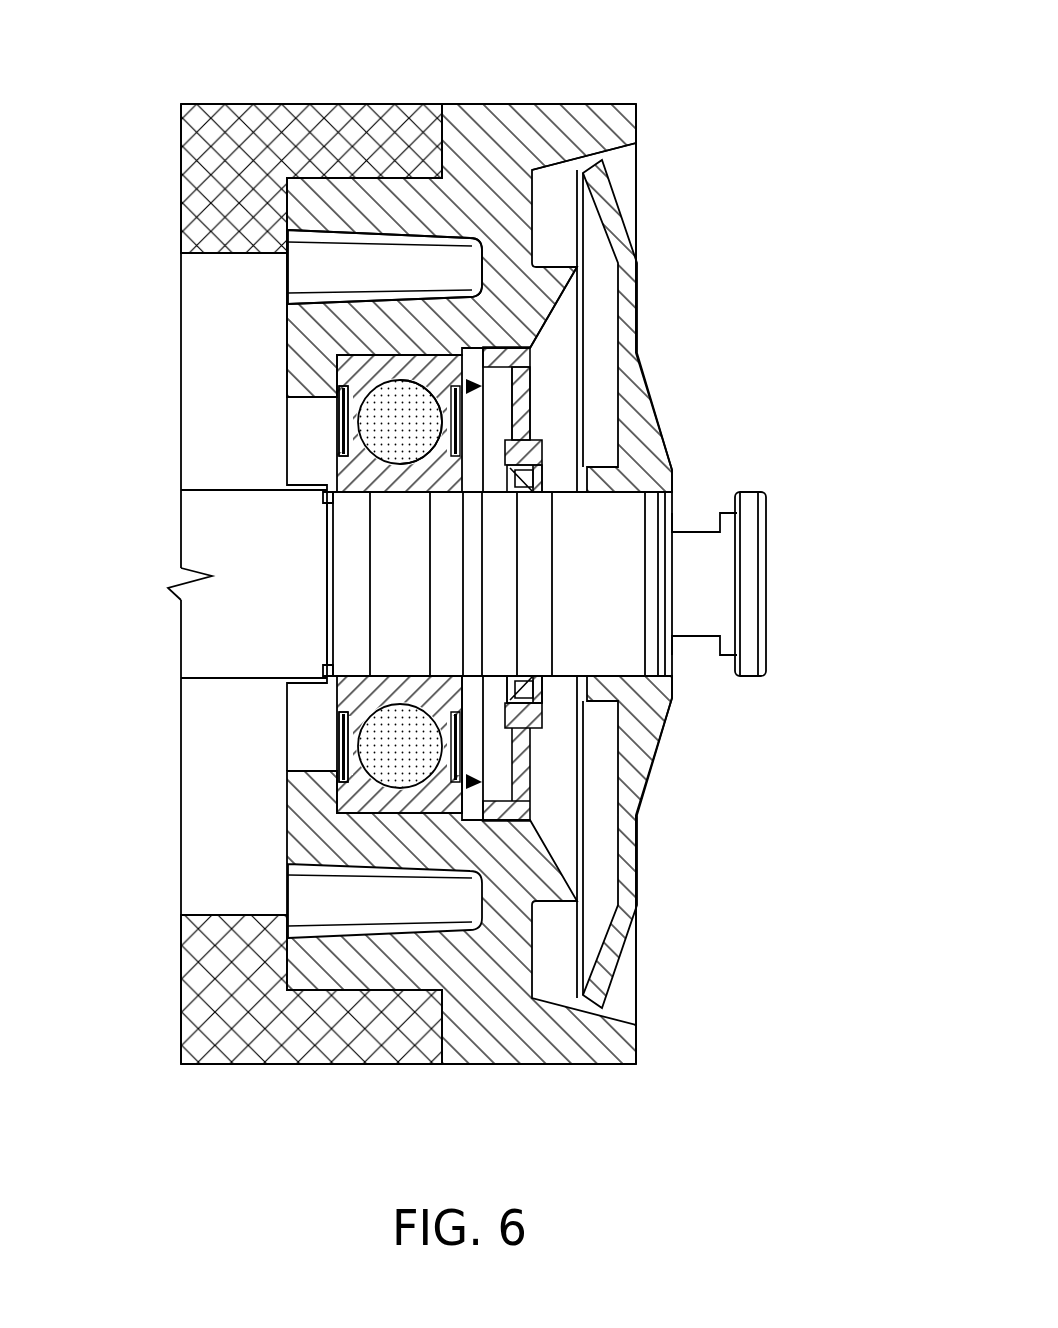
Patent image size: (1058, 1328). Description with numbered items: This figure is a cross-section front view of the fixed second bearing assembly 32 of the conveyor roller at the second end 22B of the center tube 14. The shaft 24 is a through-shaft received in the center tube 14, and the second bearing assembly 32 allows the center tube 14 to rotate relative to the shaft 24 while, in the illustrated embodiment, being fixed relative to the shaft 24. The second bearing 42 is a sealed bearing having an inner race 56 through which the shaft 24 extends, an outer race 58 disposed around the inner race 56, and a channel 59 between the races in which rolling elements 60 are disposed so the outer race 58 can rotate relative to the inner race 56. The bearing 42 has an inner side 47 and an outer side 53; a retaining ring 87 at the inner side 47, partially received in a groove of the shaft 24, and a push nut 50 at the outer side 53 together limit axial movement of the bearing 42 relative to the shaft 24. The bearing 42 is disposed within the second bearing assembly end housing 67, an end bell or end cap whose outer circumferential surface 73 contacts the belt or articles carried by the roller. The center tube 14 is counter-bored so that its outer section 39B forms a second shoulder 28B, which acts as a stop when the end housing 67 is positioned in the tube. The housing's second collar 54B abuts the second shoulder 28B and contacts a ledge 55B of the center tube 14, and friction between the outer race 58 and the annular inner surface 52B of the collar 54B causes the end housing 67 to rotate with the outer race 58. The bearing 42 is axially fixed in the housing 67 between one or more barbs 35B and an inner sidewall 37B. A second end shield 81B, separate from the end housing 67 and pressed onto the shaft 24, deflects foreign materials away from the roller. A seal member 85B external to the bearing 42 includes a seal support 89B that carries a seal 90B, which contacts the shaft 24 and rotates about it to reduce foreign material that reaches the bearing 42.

The center tube 14 is at (250, 163).
The second shoulder 28B is at (296, 186).
The second collar 54B is at (368, 196).
The ledge 55B is at (417, 185).
The second end 22B is at (492, 172).
The second bearing assembly end housing 67 is at (488, 170).
The second bearing assembly 32 is at (669, 127).
The annular inner surface 52B is at (420, 417).
The second bearing 42 is at (335, 356).
The inner sidewall 37B is at (312, 360).
The inner race 56 is at (355, 478).
The rolling elements 60 is at (474, 350).
The second end shield 81B is at (637, 297).
The barbs 35B is at (485, 368).
The seal support 89B is at (530, 400).
The channel 59 is at (447, 429).
The shaft 24 is at (766, 599).
The seal 90B is at (538, 699).
The seal member 85B is at (528, 759).
The push nut 50 is at (465, 768).
The outer side 53 is at (478, 735).
The outer circumferential surface 73 is at (560, 1066).
The retaining ring 87 is at (327, 660).
The inner side 47 is at (336, 774).
The outer section 39B is at (382, 1028).
The outer race 58 is at (420, 802).